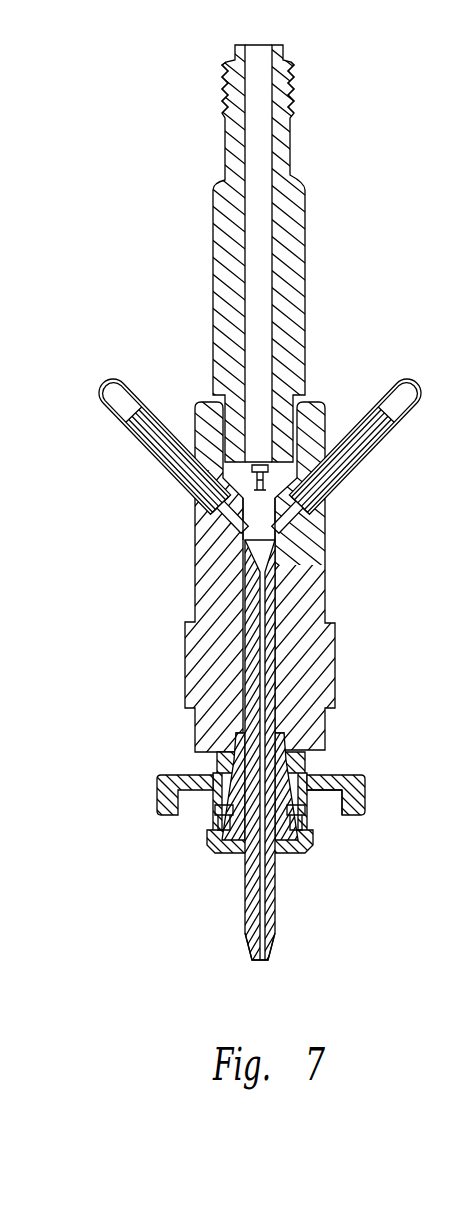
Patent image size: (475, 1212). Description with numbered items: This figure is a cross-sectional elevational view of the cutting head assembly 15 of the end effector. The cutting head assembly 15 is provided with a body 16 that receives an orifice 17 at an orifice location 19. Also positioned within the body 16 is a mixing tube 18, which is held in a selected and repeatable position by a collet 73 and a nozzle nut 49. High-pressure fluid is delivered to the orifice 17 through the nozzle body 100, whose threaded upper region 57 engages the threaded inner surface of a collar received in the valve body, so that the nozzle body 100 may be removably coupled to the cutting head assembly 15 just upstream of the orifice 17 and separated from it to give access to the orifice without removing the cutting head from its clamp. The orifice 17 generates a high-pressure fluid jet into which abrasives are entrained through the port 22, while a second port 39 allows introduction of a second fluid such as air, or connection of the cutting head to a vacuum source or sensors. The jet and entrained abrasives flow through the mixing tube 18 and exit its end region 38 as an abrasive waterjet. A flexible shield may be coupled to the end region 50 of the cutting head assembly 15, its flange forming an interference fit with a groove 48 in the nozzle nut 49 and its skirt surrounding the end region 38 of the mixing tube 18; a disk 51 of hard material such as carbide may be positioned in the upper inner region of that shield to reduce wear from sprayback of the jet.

The cutting head assembly 15 is at (152, 496).
The body 16 is at (327, 597).
The orifice 17 is at (258, 462).
The mixing tube 18 is at (267, 880).
The orifice location 19 is at (262, 495).
The port 22 is at (120, 394).
The end region of the mixing tube 38 is at (242, 953).
The second port 39 is at (398, 403).
The groove 48 is at (330, 806).
The nozzle nut 49 is at (355, 788).
The end region of cutting head assembly 50 is at (156, 774).
The disk 51 is at (474, 1060).
The upper region of the nozzle body 57 is at (216, 87).
The collet 73 is at (237, 785).
The nozzle body 100 is at (218, 185).